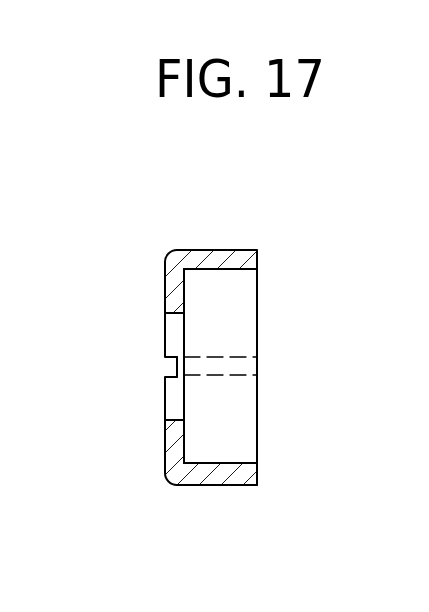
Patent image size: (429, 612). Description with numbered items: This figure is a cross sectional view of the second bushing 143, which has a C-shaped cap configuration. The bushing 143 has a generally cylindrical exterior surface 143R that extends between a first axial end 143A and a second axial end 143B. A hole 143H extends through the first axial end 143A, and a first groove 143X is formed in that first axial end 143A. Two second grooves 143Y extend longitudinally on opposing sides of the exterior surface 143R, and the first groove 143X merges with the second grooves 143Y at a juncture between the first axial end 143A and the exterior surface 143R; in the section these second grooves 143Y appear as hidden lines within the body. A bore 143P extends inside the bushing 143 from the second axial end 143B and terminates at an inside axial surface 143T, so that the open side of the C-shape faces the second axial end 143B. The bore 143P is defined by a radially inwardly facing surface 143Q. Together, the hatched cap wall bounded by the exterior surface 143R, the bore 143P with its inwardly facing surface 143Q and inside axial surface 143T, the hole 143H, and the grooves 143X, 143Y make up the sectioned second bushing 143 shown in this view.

The second bushing 143 is at (253, 189).
The second axial end 143B is at (257, 263).
The hole 143H is at (172, 284).
The first groove 143X is at (166, 366).
The first axial end 143A is at (164, 406).
The inside axial surface 143T is at (186, 318).
The bore 143P is at (216, 329).
The second grooves 143Y is at (222, 380).
The radially inwardly facing surface 143Q is at (227, 464).
The exterior surface 143R is at (219, 483).